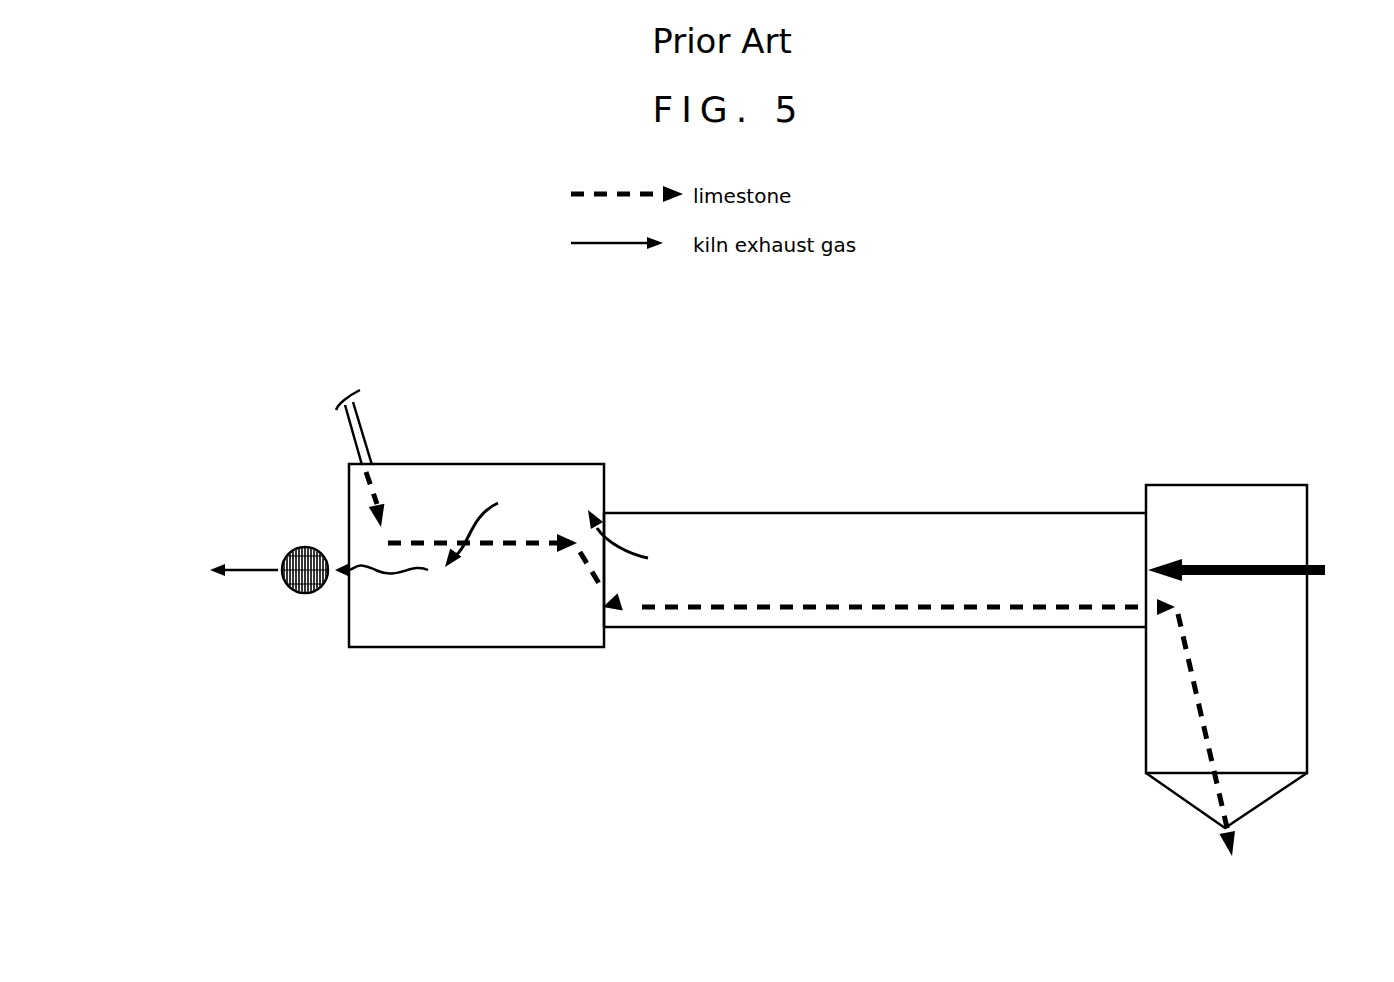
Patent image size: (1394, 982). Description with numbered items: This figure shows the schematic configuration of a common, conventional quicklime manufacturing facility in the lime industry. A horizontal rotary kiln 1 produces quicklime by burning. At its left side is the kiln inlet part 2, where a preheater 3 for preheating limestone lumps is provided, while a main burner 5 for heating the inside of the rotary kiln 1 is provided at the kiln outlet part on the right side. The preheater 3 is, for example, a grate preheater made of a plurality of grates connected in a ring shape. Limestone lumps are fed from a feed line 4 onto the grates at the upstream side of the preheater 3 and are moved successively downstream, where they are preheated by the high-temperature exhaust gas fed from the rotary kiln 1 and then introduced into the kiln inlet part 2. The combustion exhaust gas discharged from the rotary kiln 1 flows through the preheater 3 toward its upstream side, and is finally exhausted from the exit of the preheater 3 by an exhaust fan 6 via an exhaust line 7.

The rotary kiln 1 is at (885, 630).
The kiln inlet part 2 is at (612, 630).
The preheater 3 is at (480, 650).
The feed line 4 is at (360, 424).
The main burner 5 is at (1285, 562).
The exhaust fan 6 is at (306, 594).
The exhaust line 7 is at (250, 575).